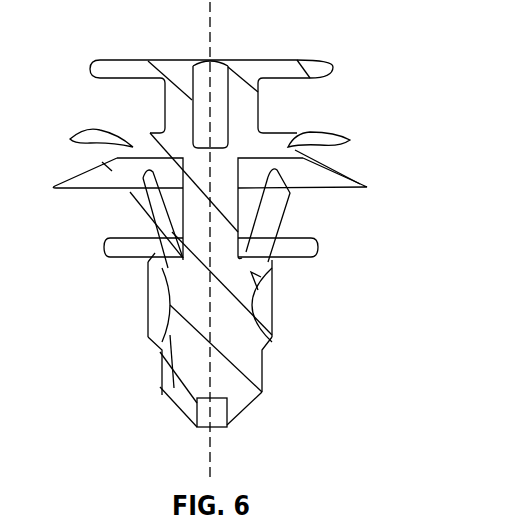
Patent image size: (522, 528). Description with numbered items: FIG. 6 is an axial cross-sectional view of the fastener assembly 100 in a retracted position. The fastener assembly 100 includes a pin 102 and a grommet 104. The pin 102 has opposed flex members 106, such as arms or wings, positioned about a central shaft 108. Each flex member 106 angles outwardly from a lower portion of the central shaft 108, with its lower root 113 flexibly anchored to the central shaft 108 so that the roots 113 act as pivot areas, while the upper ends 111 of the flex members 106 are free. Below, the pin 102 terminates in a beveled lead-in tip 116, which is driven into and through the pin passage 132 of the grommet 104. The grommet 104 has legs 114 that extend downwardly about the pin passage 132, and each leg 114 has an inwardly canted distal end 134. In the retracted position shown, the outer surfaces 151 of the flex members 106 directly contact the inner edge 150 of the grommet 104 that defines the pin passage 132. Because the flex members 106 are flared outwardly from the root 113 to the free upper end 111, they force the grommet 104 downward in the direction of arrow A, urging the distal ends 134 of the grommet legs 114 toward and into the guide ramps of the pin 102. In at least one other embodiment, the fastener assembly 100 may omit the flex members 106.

The fastener assembly 100 is at (388, 44).
The pin 102 is at (262, 92).
The grommet 104 is at (326, 250).
The flex members 106 is at (142, 214).
The central shaft 108 is at (267, 335).
The upper ends 111 is at (128, 194).
The lower roots 113 is at (162, 393).
The legs 114 is at (156, 338).
The lead-in tip 116 is at (232, 415).
The pin passage 132 is at (148, 262).
The distal ends 134 is at (165, 342).
The inner edge 150 is at (267, 262).
The outer surfaces 151 is at (108, 250).
The arrow A is at (212, 12).